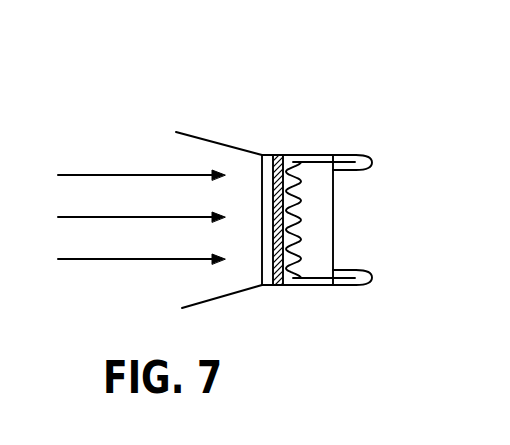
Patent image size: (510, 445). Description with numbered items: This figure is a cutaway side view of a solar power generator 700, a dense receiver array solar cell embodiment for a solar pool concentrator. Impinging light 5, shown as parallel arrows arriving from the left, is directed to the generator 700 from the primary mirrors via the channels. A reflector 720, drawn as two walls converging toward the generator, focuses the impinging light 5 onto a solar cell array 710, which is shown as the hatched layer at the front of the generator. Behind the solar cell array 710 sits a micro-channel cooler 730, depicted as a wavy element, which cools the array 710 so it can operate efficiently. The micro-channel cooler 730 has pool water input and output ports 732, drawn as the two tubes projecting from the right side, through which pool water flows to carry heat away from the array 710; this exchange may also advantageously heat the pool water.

The solar power generator 700 is at (313, 74).
The solar cell array 710 is at (280, 155).
The reflector 720 is at (197, 138).
The micro-channel cooler 730 is at (295, 258).
The pool water input and output ports 732 is at (372, 162).
The impinging light 5 is at (100, 175).